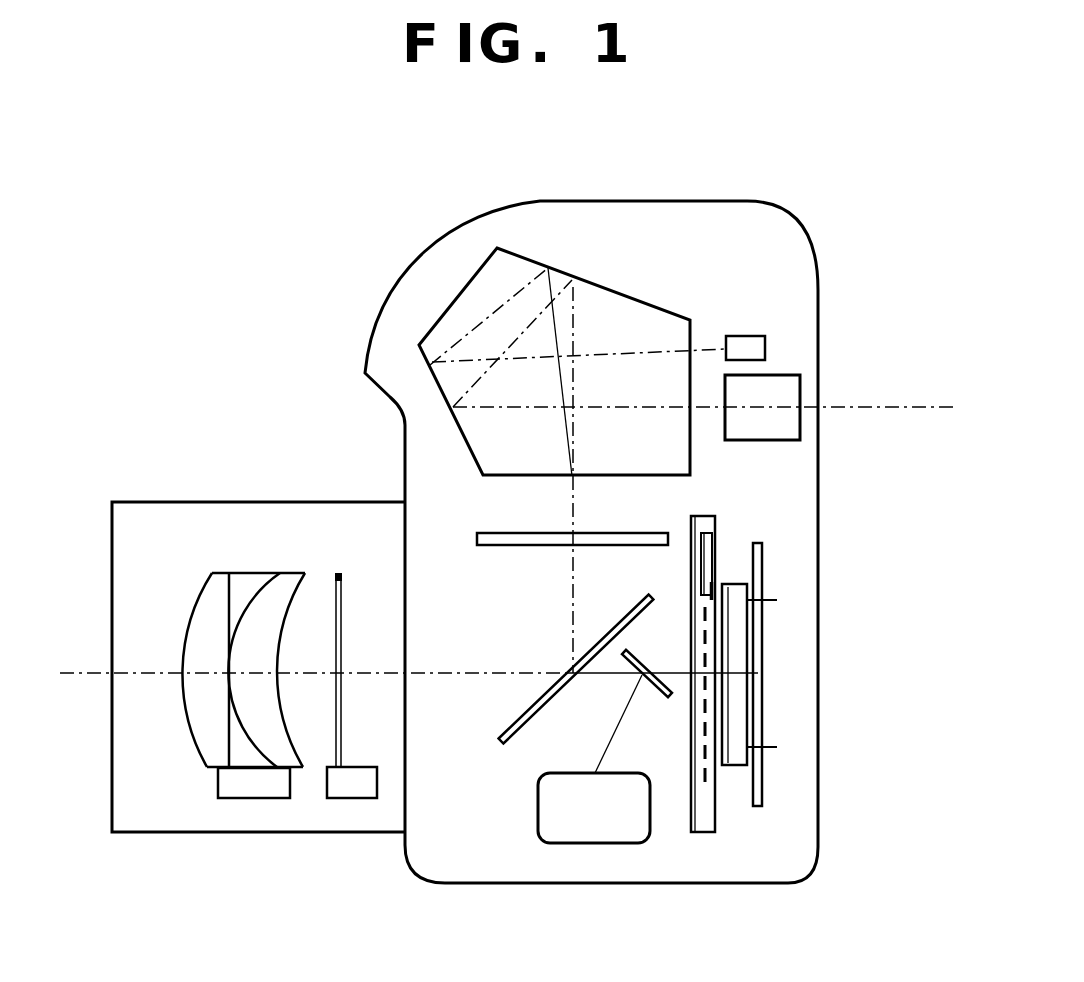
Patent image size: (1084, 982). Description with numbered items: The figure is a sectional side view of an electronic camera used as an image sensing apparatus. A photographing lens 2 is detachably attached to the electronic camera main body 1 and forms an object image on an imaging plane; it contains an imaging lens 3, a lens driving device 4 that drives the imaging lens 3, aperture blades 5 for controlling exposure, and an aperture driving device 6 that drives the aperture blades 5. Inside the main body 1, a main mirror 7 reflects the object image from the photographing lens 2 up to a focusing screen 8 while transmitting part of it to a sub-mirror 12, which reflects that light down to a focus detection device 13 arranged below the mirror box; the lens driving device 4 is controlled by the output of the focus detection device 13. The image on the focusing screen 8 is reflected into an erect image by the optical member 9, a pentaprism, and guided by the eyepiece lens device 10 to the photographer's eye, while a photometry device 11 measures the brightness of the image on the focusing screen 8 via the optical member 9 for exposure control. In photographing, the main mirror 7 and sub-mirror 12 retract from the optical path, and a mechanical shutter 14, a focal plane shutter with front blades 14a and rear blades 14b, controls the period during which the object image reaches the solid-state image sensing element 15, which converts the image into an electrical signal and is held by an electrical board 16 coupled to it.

The electronic camera main body 1 is at (805, 240).
The photographing lens 2 is at (152, 832).
The imaging lens 3 is at (215, 590).
The lens driving device 4 is at (257, 790).
The aperture blades 5 is at (338, 573).
The aperture driving device 6 is at (345, 790).
The main mirror 7 is at (500, 735).
The focusing screen 8 is at (512, 532).
The optical member 9 is at (443, 313).
The eyepiece lens device 10 is at (800, 393).
The photometry device 11 is at (765, 346).
The sub-mirror 12 is at (657, 693).
The focus detection device 13 is at (552, 833).
The mechanical shutter 14 is at (700, 833).
The front blades 14a is at (700, 778).
The rear blades 14b is at (708, 540).
The solid-state image sensing element 15 is at (727, 765).
The electrical board 16 is at (762, 625).